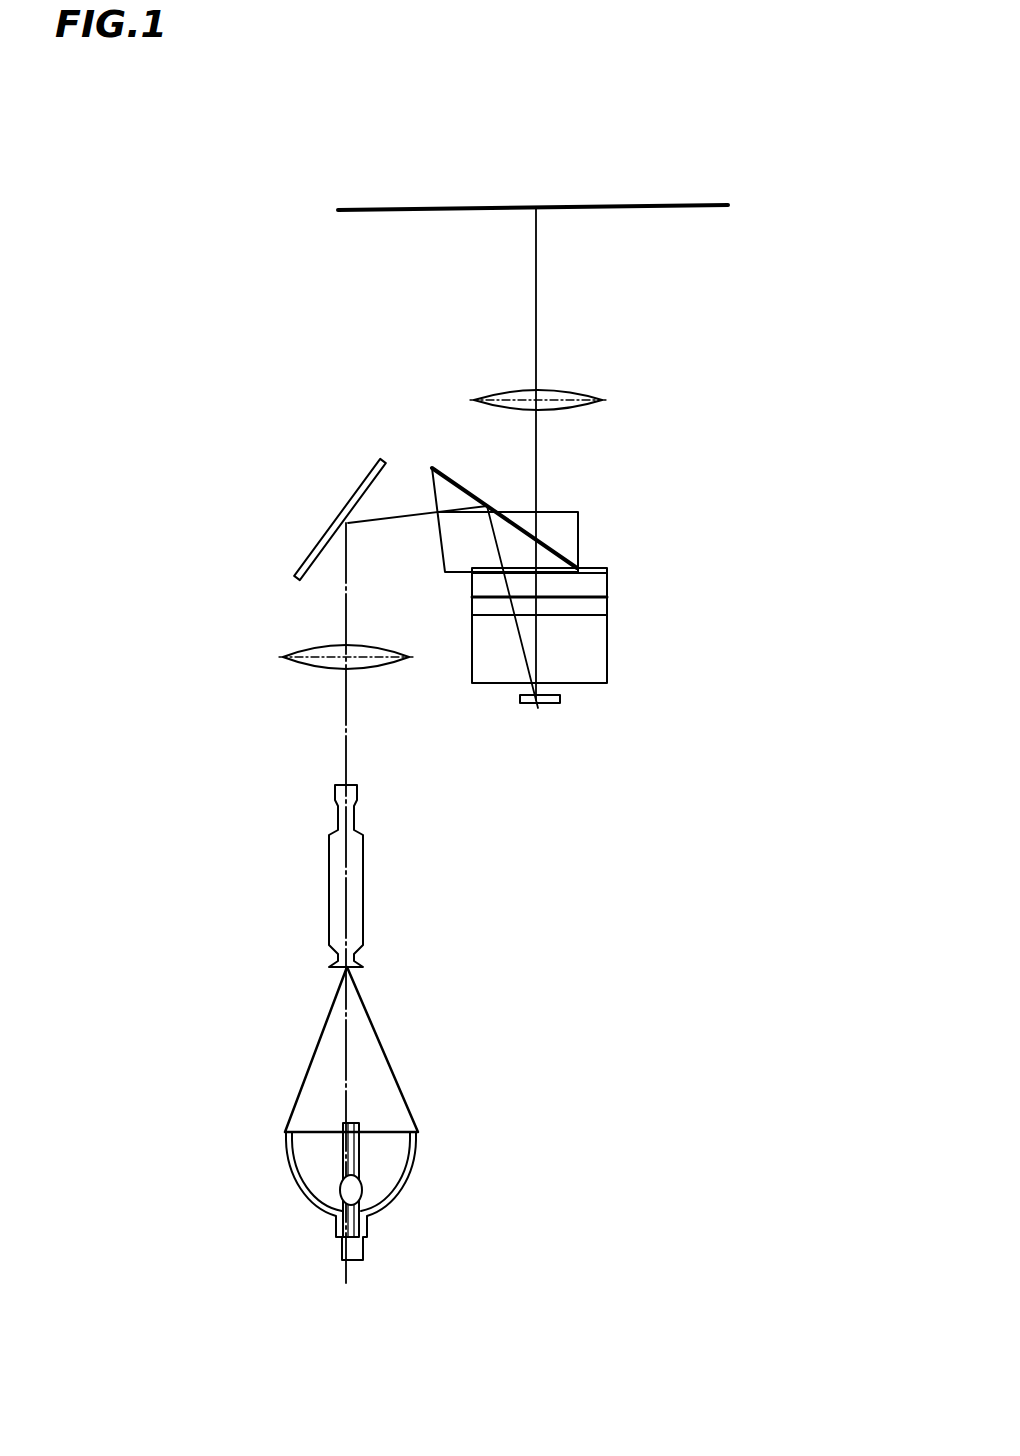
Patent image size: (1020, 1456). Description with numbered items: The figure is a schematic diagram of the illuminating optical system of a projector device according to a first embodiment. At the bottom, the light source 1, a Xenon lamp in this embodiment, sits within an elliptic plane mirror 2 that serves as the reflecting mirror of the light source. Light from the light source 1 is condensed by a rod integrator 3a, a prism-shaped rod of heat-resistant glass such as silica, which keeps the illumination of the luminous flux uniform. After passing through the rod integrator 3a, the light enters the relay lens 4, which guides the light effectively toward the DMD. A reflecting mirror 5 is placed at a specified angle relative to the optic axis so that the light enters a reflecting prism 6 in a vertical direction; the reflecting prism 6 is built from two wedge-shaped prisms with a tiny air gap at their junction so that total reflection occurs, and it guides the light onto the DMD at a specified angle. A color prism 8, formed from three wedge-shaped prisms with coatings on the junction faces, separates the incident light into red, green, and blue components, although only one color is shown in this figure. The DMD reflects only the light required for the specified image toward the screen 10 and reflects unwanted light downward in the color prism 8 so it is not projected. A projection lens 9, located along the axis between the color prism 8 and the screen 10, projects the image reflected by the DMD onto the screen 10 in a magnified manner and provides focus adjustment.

The light source 1 is at (343, 1183).
The elliptic plane mirror 2 is at (317, 1213).
The rod integrator 3a is at (332, 890).
The relay lens 4 is at (283, 657).
The reflecting mirror 5 is at (320, 533).
The reflecting prism 6 is at (432, 468).
The color prism 8 is at (607, 635).
The projection lens 9 is at (604, 400).
The screen 10 is at (363, 211).
The element DMD is at (532, 708).